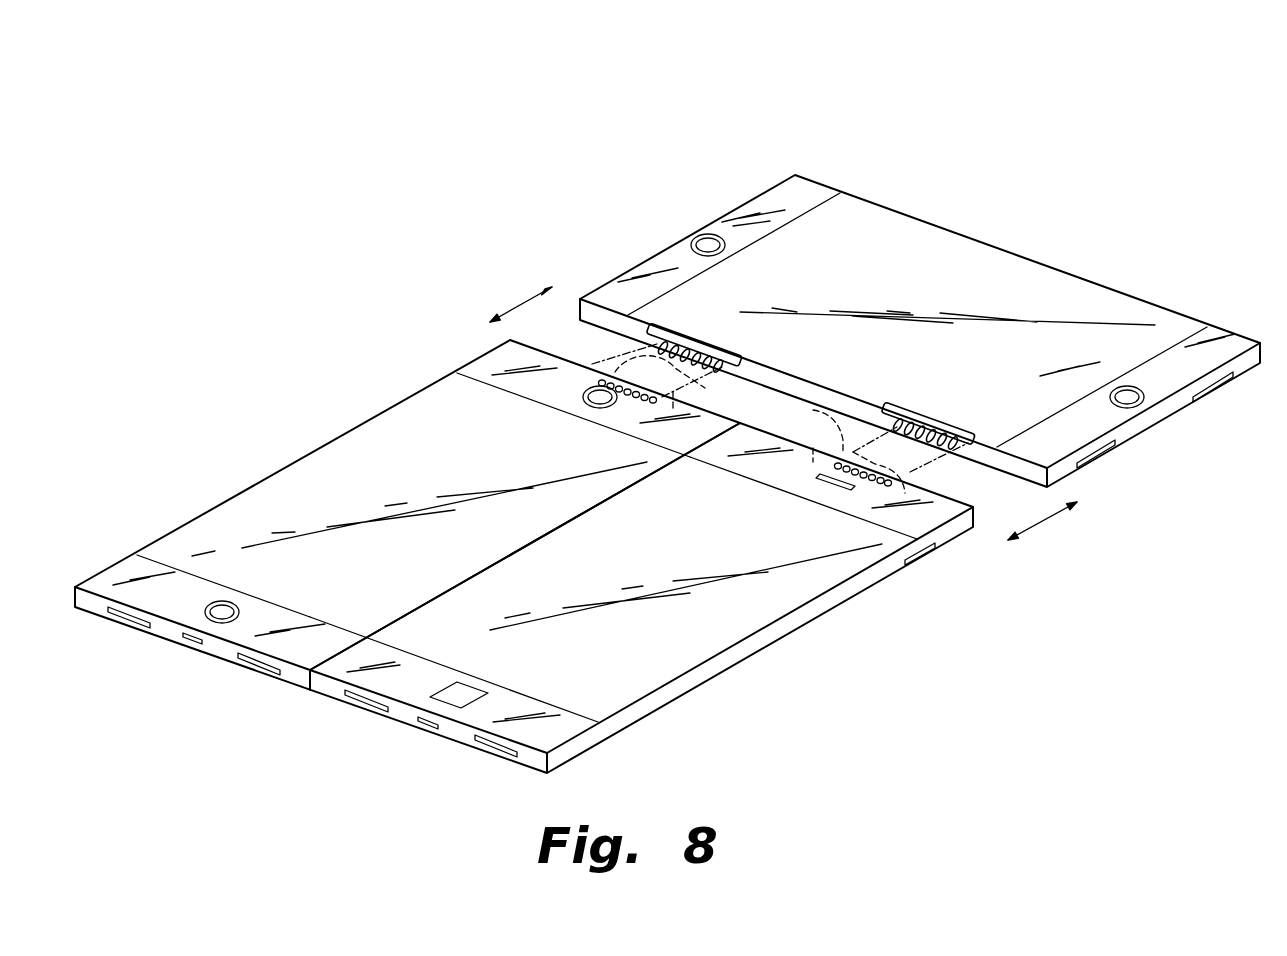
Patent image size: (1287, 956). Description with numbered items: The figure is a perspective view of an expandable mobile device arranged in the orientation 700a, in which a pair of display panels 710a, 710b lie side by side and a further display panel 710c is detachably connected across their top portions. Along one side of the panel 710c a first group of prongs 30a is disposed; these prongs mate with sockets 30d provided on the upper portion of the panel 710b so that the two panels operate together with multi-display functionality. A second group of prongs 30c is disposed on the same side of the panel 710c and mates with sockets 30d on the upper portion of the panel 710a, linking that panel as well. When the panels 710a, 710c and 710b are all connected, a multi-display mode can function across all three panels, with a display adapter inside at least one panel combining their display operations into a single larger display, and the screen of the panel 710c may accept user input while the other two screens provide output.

The orientation 700a is at (167, 66).
The display panel 710a is at (630, 672).
The display panel 710b is at (390, 585).
The display panel 710c is at (907, 282).
The first group of prongs 30a is at (710, 307).
The second group of prongs 30c is at (933, 414).
The sockets 30d is at (813, 410).